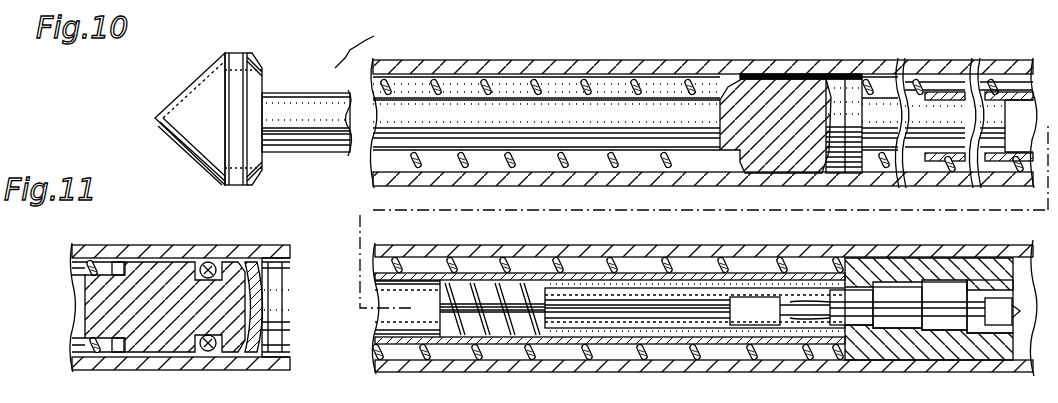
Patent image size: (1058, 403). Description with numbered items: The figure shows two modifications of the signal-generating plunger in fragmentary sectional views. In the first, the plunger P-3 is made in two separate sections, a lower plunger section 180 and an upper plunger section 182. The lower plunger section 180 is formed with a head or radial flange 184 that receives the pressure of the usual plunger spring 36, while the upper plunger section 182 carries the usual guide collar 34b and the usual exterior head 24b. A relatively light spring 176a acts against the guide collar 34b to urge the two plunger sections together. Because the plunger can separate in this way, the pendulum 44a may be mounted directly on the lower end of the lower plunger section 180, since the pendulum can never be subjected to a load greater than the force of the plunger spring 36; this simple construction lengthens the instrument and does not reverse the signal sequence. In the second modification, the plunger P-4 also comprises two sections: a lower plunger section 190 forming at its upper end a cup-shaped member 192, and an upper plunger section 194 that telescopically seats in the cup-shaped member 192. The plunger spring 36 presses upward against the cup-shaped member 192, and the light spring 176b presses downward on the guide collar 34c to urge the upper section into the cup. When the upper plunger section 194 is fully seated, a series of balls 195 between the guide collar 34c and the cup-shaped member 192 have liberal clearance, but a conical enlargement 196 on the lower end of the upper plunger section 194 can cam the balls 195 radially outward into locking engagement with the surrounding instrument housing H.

In FIG. 10, the exterior head 24b is at (256, 68).
In FIG. 10, the light spring 176a is at (484, 80).
In FIG. 10, the upper plunger section 182 is at (560, 90).
In FIG. 10, the plunger P-3 is at (616, 90).
In FIG. 10, the instrument housing H is at (726, 60).
In FIG. 11, the instrument housing H is at (193, 250).
In FIG. 10, the guide collar 34b is at (798, 92).
In FIG. 10, the lower plunger section 180 is at (880, 92).
In FIG. 11, the lower plunger section 180 is at (404, 350).
In FIG. 10, the plunger spring 36 is at (918, 77).
In FIG. 11, the plunger spring 36 is at (270, 262).
In FIG. 10, the radial flange 184 is at (862, 166).
In FIG. 11, the light spring 176b is at (87, 262).
In FIG. 11, the plunger P-4 is at (112, 272).
In FIG. 11, the conical enlargement 196 is at (215, 262).
In FIG. 11, the upper plunger section 194 is at (100, 340).
In FIG. 11, the guide collar 34c is at (166, 345).
In FIG. 11, the balls 195 is at (190, 352).
In FIG. 11, the cup-shaped member 192 is at (250, 345).
In FIG. 11, the lower plunger section 190 is at (276, 345).
In FIG. 11, the pendulum 44a is at (998, 322).